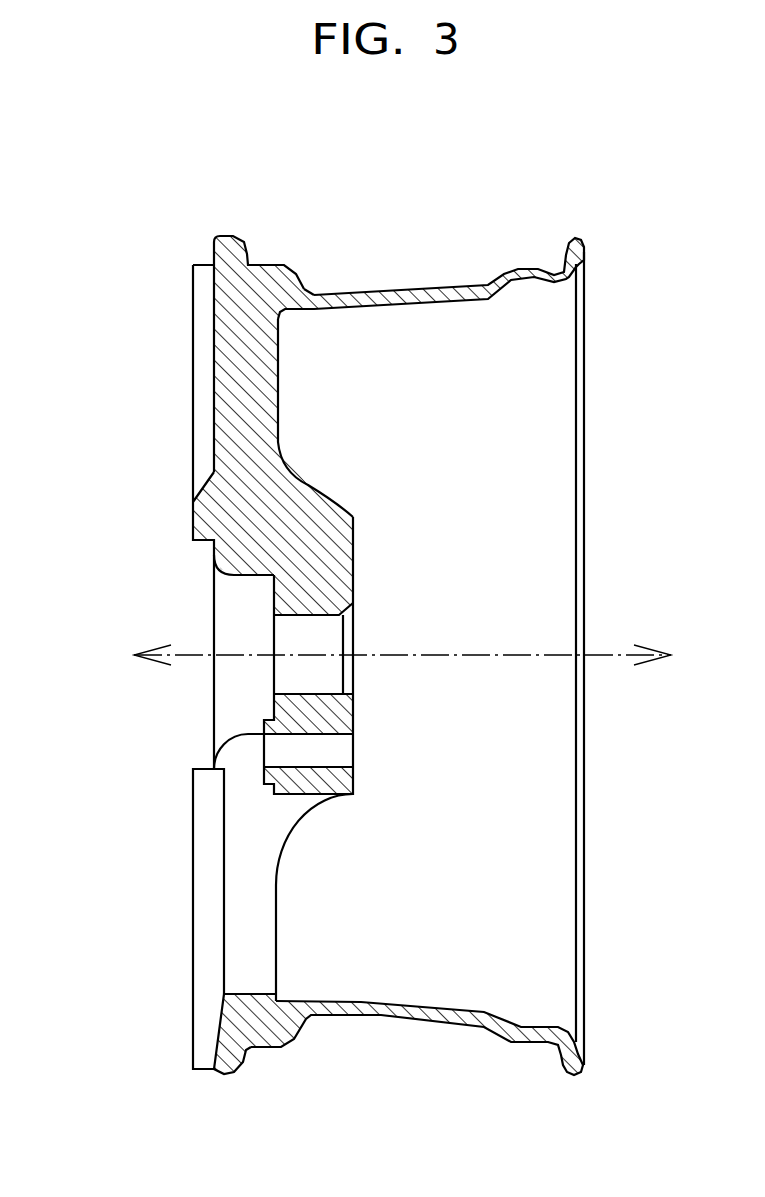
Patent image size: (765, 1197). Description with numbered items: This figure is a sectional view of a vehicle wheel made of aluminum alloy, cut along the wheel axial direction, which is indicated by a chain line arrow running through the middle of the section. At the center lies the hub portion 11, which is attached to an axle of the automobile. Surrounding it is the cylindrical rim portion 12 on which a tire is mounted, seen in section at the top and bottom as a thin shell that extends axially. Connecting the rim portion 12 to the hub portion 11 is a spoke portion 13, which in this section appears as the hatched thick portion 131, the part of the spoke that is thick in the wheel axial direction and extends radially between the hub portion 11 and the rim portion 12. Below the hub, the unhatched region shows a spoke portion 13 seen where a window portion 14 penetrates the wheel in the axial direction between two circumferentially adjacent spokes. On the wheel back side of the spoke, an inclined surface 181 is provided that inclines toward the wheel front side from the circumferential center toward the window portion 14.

The hub portion 11 is at (353, 577).
The rim portion 12 is at (387, 292).
The spoke portion 13 is at (213, 380).
The thick portion 131 is at (250, 372).
The window portion 14 is at (257, 846).
The inclined surface 181 is at (208, 792).